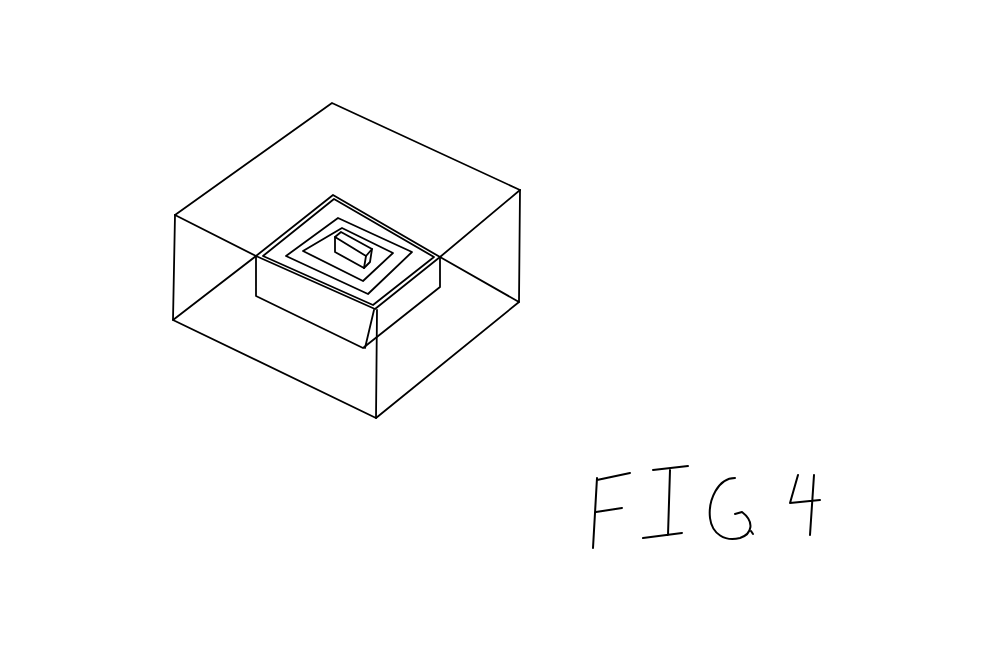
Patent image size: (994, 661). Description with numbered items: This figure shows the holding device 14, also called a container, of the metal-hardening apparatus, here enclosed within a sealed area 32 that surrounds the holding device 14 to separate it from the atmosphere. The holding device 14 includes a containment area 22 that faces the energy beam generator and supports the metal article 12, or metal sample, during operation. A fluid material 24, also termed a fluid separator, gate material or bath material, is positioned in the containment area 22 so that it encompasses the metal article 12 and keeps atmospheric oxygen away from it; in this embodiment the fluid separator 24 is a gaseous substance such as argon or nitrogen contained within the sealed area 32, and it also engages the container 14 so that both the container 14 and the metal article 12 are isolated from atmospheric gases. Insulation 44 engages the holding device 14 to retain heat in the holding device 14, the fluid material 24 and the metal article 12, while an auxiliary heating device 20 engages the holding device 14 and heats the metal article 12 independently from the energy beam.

The metal article 12 is at (380, 248).
The holding device 14 is at (405, 287).
The auxiliary heating device 20 is at (410, 264).
The containment area 22 is at (342, 230).
The fluid material 24 is at (275, 220).
The sealed area 32 is at (185, 448).
The insulation 44 is at (257, 257).